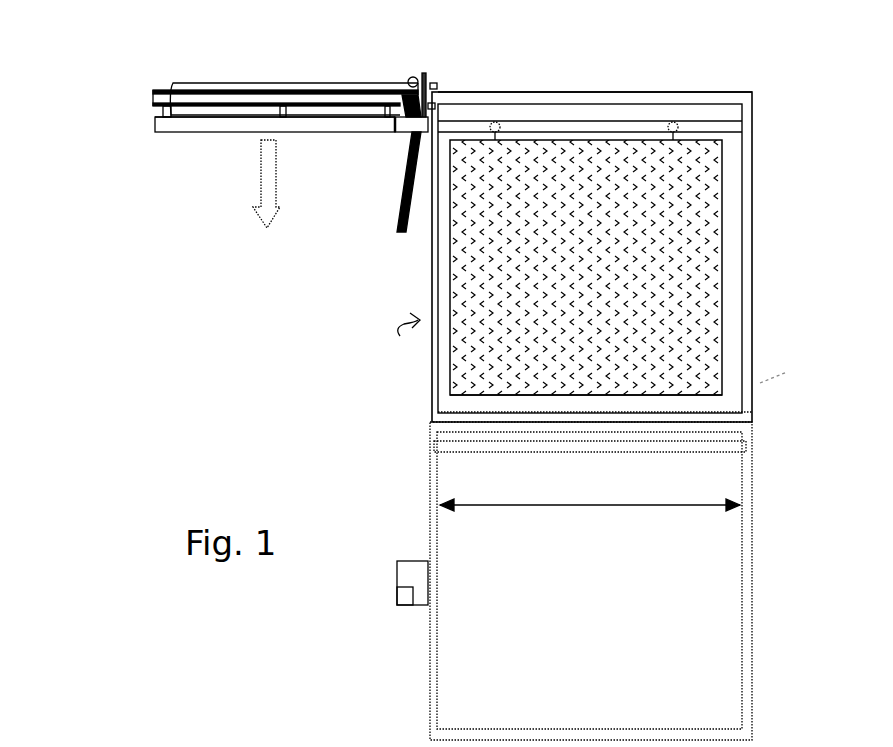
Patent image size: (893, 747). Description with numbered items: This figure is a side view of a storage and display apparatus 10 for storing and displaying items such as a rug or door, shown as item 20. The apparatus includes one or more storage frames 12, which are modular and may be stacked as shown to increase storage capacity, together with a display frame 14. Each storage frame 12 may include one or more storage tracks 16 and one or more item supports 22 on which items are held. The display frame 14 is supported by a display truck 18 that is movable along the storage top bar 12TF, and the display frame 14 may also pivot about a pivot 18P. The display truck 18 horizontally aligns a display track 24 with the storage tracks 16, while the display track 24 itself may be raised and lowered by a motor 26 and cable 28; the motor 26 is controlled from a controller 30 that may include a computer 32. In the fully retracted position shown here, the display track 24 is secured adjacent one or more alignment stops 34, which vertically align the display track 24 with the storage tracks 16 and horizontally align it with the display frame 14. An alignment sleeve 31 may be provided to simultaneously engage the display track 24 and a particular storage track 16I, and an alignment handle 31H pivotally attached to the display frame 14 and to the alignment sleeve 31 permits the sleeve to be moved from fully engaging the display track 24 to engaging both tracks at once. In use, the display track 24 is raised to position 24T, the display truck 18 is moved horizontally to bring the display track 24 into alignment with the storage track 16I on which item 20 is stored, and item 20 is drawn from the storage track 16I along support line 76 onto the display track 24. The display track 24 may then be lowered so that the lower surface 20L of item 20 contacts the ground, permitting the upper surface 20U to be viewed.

The storage and display apparatus 10 is at (133, 350).
The storage frame 12 is at (754, 222).
The storage top bar 12TF is at (446, 93).
The display frame 14 is at (287, 72).
The storage track 16 is at (562, 455).
The storage track 16I is at (745, 127).
The display truck 18 is at (438, 81).
The pivot 18P is at (423, 73).
The item 20 is at (724, 297).
The upper surface 20U is at (409, 337).
The lower surface 20L is at (730, 393).
The item support 22 is at (498, 120).
The display track 24 is at (214, 132).
The raised position of display track 24T is at (153, 128).
The motor 26 is at (402, 78).
The cable 28 is at (173, 76).
The controller 30 is at (402, 579).
The alignment sleeve 31 is at (400, 134).
The alignment handle 31H is at (396, 232).
The computer 32 is at (406, 608).
The alignment stop 34 is at (161, 110).
The support line 76 is at (524, 515).